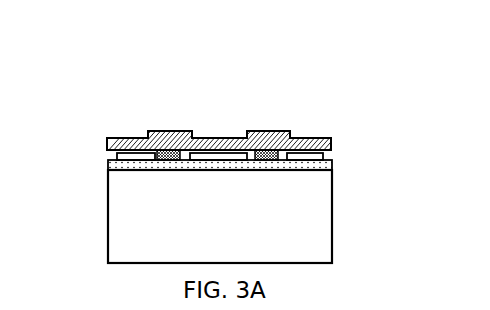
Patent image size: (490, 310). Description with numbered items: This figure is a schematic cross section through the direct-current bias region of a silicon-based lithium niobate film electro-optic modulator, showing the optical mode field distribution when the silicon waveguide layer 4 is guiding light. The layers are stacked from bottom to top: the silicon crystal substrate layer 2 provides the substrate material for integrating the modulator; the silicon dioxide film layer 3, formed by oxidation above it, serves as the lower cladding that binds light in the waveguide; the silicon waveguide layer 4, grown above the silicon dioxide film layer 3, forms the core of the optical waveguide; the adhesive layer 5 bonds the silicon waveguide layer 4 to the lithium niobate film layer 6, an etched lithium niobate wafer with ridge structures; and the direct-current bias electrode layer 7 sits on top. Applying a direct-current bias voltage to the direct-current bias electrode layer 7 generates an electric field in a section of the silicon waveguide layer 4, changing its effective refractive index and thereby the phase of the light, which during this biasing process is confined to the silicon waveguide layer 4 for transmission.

The silicon crystal substrate layer 2 is at (117, 220).
The silicon dioxide film layer 3 is at (110, 165).
The silicon waveguide layer 4 is at (116, 137).
The adhesive layer 5 is at (333, 157).
The lithium niobate film layer 6 is at (333, 141).
The direct-current bias electrode layer 7 is at (289, 137).